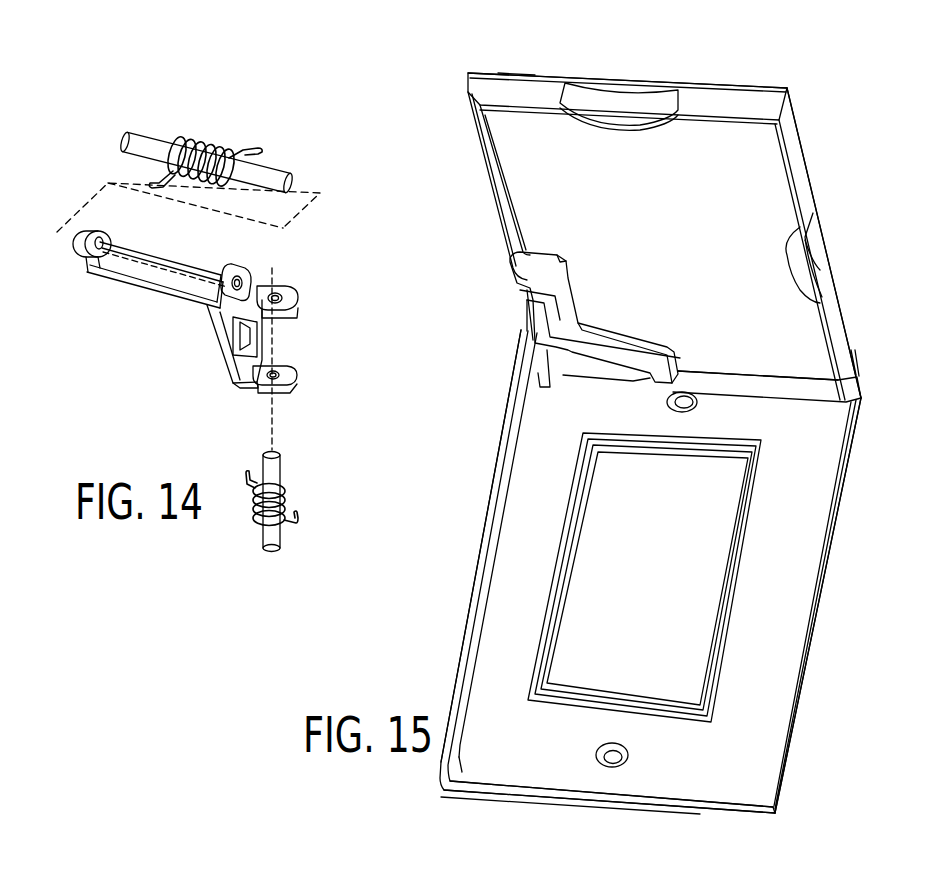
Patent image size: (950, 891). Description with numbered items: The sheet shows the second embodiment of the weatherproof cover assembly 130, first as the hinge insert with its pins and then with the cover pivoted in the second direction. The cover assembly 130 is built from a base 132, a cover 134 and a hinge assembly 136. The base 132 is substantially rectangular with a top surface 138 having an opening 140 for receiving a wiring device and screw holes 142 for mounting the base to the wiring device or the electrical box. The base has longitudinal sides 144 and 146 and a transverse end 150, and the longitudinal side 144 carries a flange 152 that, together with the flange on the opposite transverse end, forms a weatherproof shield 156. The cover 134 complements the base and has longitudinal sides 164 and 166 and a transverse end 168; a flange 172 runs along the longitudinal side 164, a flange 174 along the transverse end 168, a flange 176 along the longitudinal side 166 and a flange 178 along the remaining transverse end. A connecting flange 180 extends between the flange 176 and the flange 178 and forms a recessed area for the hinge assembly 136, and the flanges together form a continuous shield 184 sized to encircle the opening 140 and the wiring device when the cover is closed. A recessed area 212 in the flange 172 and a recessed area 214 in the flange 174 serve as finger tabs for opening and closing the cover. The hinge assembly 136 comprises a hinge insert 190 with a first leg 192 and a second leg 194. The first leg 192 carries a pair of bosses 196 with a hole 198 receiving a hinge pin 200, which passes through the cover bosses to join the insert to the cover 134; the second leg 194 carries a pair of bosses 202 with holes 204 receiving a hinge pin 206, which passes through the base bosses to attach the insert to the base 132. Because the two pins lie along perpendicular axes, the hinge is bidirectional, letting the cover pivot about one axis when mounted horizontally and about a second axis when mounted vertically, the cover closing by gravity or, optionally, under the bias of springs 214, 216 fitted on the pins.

In FIG. 15, the weatherproof cover assembly 130 is at (481, 378).
In FIG. 15, the base 132 is at (611, 570).
In FIG. 15, the cover 134 is at (621, 250).
In FIG. 14, the hinge assembly 136 is at (155, 345).
In FIG. 15, the top surface 138 is at (650, 798).
In FIG. 15, the opening 140 is at (605, 682).
In FIG. 15, the screw holes 142 is at (674, 406).
In FIG. 15, the longitudinal side 144 is at (462, 725).
In FIG. 15, the longitudinal side 146 is at (783, 725).
In FIG. 15, the transverse end 150 is at (560, 800).
In FIG. 15, the flange 152 is at (480, 586).
In FIG. 15, the weatherproof shield 156 is at (480, 507).
In FIG. 15, the longitudinal side 164 is at (800, 110).
In FIG. 15, the longitudinal side 166 is at (515, 221).
In FIG. 15, the transverse end 168 is at (706, 82).
In FIG. 15, the flange 172 is at (806, 183).
In FIG. 15, the flange 174 is at (742, 85).
In FIG. 15, the flange 176 is at (500, 185).
In FIG. 15, the flange 178 is at (790, 392).
In FIG. 15, the connecting flange 180 is at (622, 342).
In FIG. 15, the continuous shield 184 is at (536, 82).
In FIG. 14, the hinge insert 190 is at (215, 360).
In FIG. 14, the first leg 192 is at (130, 295).
In FIG. 14, the second leg 194 is at (283, 345).
In FIG. 14, the bosses 196 is at (237, 265).
In FIG. 14, the hole 198 is at (100, 233).
In FIG. 14, the hinge pin 200 is at (147, 134).
In FIG. 14, the bosses 202 is at (285, 303).
In FIG. 14, the holes 204 is at (290, 296).
In FIG. 14, the hinge pin 206 is at (282, 484).
In FIG. 15, the recessed area 212 is at (805, 270).
In FIG. 14, the recessed area / spring 214 is at (248, 142).
In FIG. 15, the recessed area / spring 214 is at (612, 105).
In FIG. 14, the spring 216 is at (292, 521).